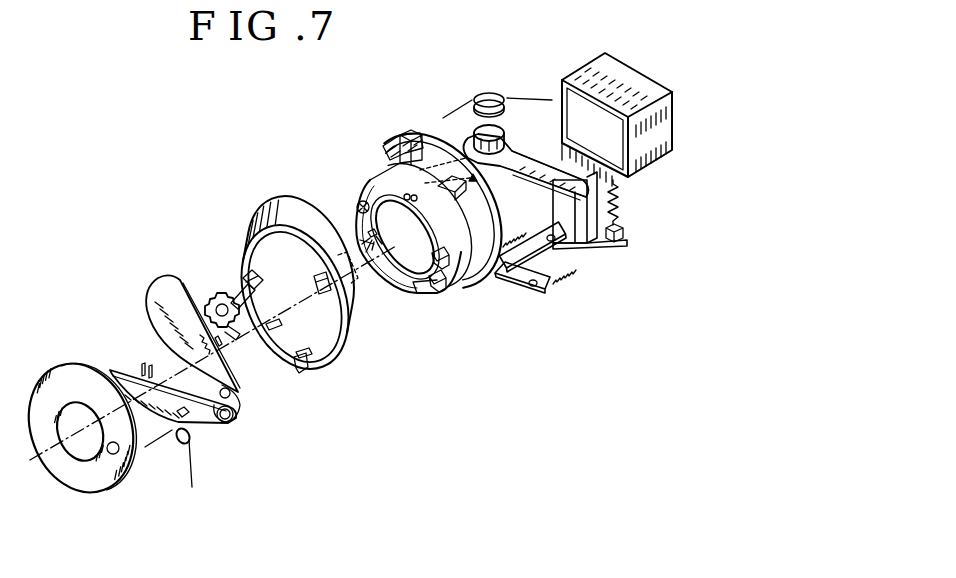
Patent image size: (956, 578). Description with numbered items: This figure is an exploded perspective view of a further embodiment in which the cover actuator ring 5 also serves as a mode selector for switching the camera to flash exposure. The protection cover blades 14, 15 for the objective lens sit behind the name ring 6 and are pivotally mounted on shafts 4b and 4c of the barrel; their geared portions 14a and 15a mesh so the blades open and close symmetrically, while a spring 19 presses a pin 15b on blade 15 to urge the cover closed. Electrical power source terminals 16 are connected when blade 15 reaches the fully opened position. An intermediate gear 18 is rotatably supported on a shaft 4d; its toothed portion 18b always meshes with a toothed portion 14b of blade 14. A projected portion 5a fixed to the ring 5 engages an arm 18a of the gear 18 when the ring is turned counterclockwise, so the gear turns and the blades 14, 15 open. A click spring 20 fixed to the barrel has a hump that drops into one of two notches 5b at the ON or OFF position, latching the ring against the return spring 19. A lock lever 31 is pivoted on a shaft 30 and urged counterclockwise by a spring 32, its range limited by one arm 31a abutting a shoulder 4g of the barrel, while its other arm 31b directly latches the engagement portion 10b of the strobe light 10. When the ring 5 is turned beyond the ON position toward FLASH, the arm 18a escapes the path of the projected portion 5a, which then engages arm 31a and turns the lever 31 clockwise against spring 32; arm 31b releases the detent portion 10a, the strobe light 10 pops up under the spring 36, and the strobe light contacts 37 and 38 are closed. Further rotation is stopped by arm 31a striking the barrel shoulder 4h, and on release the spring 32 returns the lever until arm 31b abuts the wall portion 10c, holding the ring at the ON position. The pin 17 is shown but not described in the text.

The shaft 4b is at (433, 255).
The shaft 4c is at (436, 296).
The shaft 4d is at (403, 196).
The shoulder 4g is at (478, 181).
The shoulder 4h is at (407, 131).
The cover actuator ring 5 is at (278, 226).
The projected portion 5a is at (321, 291).
The notches 5b is at (301, 374).
The name ring 6 is at (57, 383).
The strobe light 10 is at (628, 77).
The detent portion 10a is at (568, 193).
The engagement portion 10b is at (582, 244).
The wall portion 10c is at (577, 210).
The protection cover blade 14 is at (158, 291).
The geared portion 14a is at (240, 400).
The toothed portion 14b is at (224, 355).
The protection cover blade 15 is at (112, 370).
The geared portion 15a is at (232, 423).
The pin 15b is at (186, 416).
The electrical power source terminals 16 is at (363, 233).
The pins 17 is at (144, 367).
The intermediate gear 18 is at (213, 297).
The arm 18a is at (255, 281).
The toothed portion 18b is at (239, 333).
The spring 19 is at (180, 448).
The click spring 20 is at (420, 300).
The shaft 30 is at (478, 128).
The lock lever 31 is at (466, 145).
The arm 31a is at (394, 156).
The arm 31b is at (533, 170).
The spring 32 is at (493, 90).
The spring 36 is at (624, 222).
The strobe light contact 37 is at (508, 282).
The strobe light contact 38 is at (568, 246).